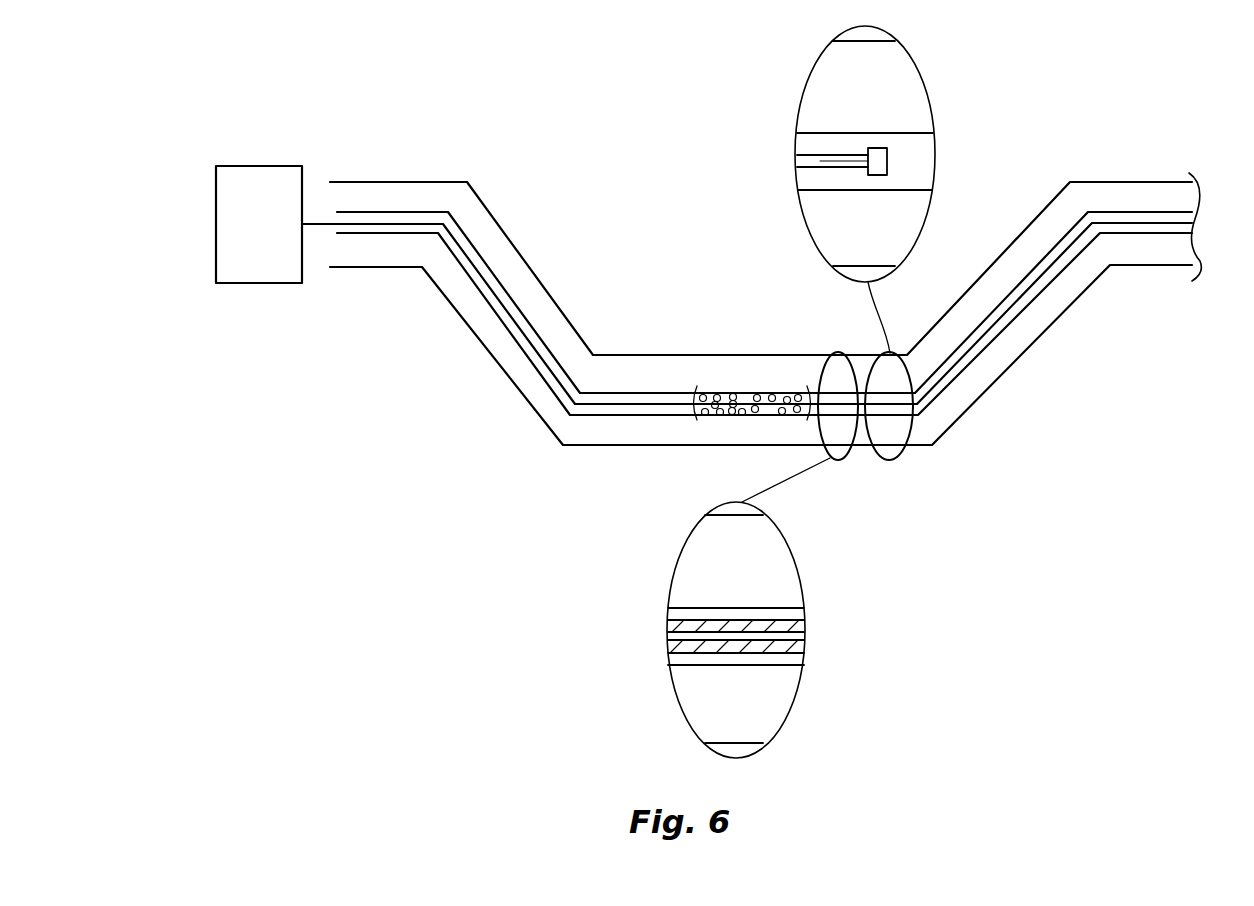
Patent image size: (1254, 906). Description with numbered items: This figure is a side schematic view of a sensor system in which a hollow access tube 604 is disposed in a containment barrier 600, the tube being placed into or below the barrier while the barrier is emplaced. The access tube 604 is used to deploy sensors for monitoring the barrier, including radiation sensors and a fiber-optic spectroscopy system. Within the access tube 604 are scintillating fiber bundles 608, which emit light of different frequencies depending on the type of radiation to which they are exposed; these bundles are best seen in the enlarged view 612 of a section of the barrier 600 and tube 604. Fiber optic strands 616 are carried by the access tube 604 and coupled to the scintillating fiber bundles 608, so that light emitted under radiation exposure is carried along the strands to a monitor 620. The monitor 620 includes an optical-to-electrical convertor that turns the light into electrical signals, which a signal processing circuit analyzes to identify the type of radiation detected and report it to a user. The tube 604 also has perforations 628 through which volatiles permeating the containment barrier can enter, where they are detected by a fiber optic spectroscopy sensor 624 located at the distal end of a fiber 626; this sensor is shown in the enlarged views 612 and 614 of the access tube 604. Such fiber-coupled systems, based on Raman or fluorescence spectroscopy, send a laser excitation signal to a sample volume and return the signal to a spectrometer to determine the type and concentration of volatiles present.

The containment barrier 600 is at (542, 402).
The hollow access tube 604 is at (497, 317).
The scintillating fiber bundle 608 is at (790, 627).
The enlarged view 612 is at (793, 710).
The enlarged view 614 is at (802, 92).
The fiber optic strand 616 is at (622, 405).
The monitor 620 is at (255, 283).
The fiber optic spectroscopy sensor 624 is at (878, 163).
The fiber 626 is at (822, 167).
The perforations 628 is at (742, 380).